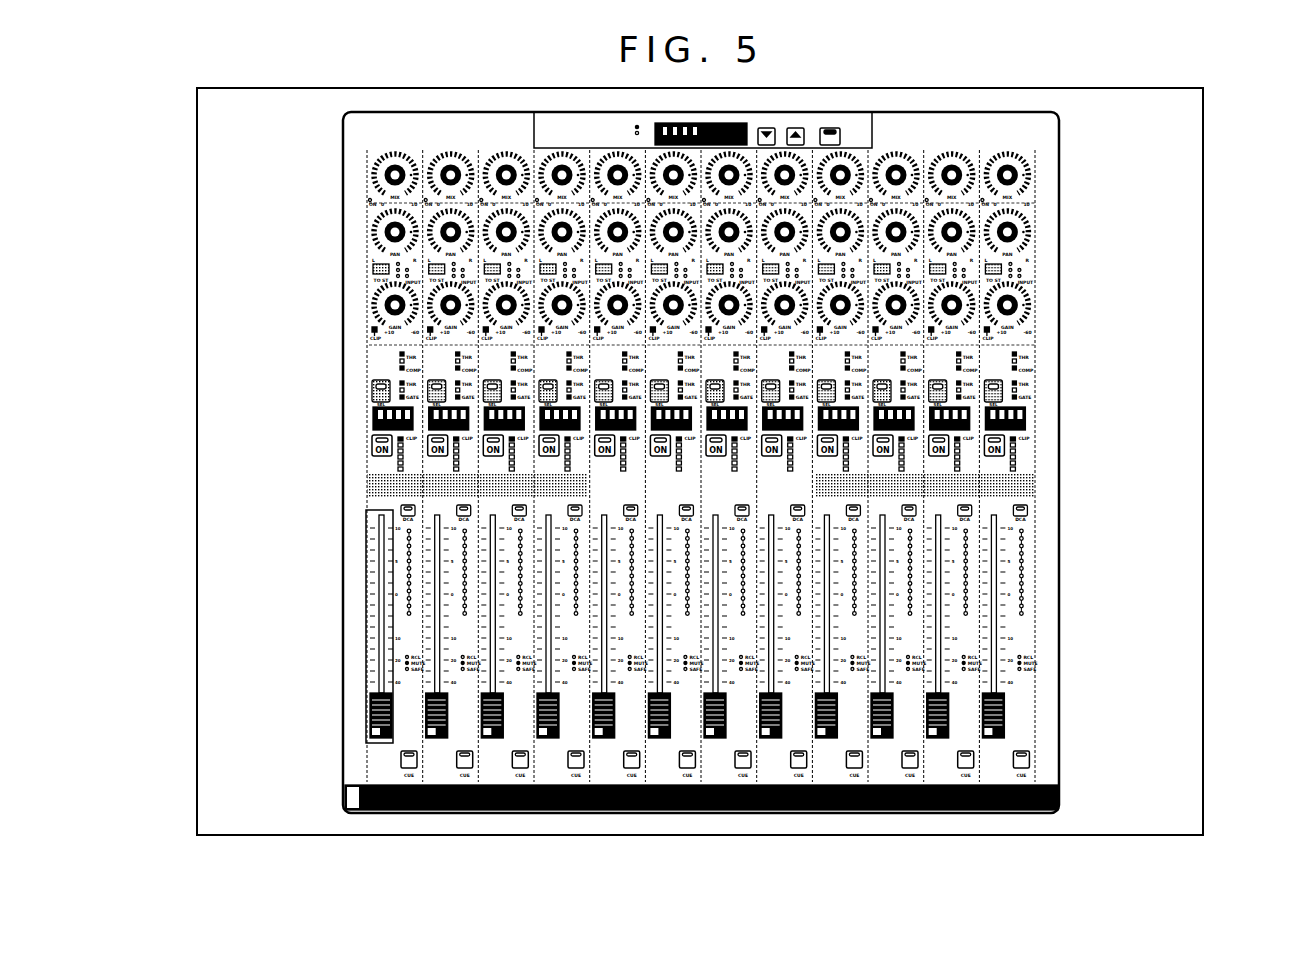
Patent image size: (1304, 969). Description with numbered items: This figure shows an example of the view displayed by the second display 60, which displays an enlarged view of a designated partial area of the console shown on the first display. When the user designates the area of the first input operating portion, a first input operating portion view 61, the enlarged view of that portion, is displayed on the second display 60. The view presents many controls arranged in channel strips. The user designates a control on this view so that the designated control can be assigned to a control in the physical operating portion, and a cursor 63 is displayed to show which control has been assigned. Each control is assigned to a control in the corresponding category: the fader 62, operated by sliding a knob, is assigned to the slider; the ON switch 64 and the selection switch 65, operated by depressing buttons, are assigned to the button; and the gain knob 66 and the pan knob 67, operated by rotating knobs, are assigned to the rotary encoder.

The second display 60 is at (1203, 172).
The first input operating portion view 61 is at (1060, 265).
The fader 62 is at (368, 708).
The cursor 63 is at (367, 607).
The ON switch 64 is at (375, 447).
The selection switch 65 is at (375, 388).
The gain knob 66 is at (392, 304).
The pan knob 67 is at (392, 230).